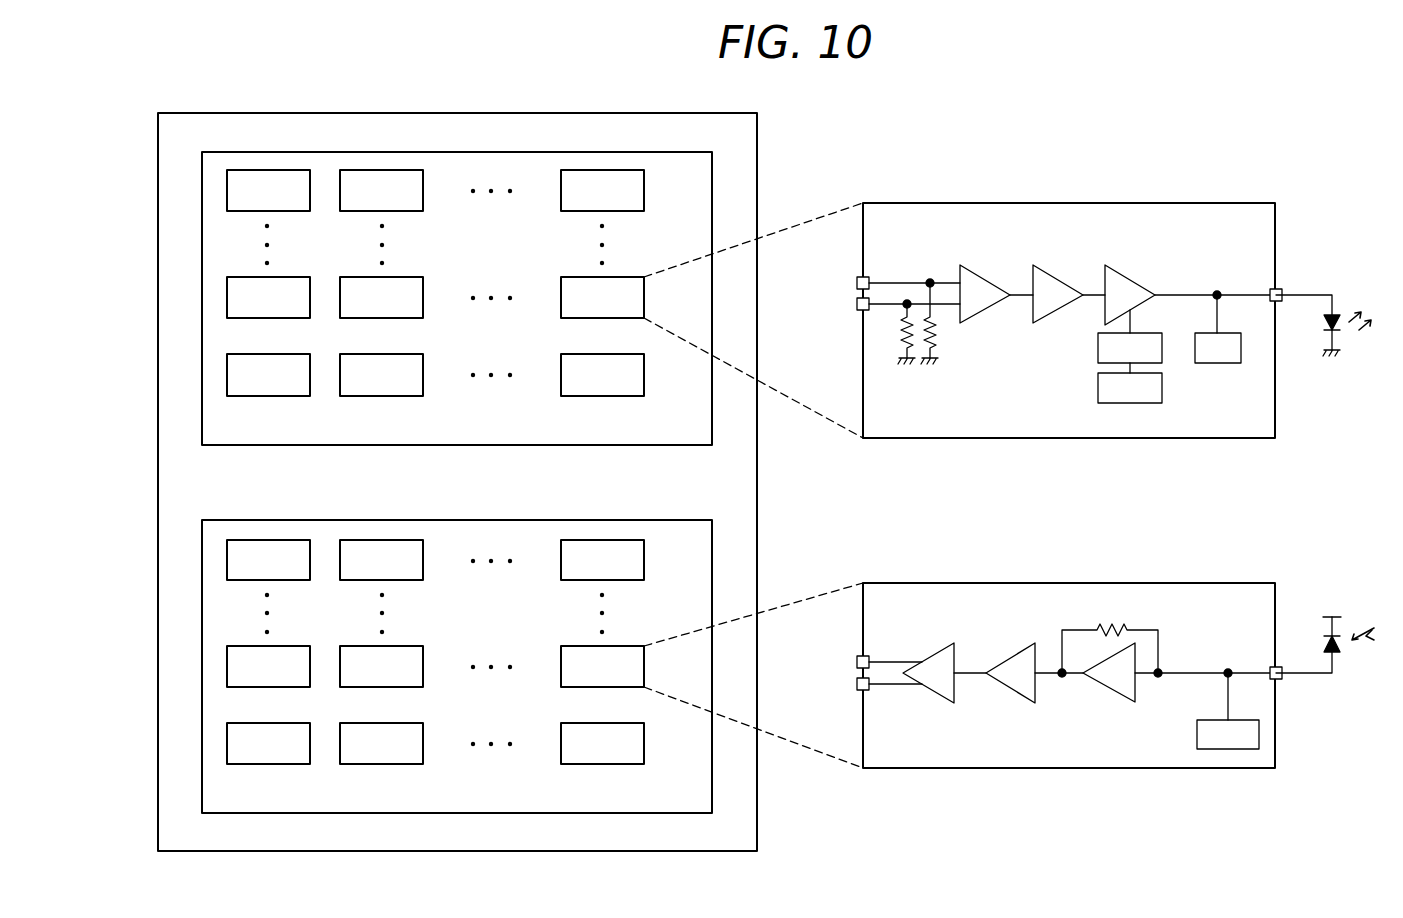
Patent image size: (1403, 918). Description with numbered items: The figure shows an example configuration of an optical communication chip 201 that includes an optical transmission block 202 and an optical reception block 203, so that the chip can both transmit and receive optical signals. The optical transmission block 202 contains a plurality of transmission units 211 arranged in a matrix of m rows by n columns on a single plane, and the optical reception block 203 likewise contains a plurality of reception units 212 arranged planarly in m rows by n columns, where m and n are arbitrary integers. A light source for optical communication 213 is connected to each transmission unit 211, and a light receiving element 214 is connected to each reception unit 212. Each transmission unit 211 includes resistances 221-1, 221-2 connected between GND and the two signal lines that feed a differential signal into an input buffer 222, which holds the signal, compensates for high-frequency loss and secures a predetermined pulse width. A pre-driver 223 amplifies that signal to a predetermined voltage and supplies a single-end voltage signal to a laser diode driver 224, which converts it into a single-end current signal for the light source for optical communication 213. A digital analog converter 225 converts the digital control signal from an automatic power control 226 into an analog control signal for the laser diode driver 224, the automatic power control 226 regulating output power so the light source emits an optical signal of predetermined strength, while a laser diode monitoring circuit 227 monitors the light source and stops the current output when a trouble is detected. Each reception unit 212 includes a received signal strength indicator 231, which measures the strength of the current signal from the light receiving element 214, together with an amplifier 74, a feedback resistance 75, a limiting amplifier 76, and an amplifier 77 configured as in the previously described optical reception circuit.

The optical communication chip 201 is at (458, 113).
The optical transmission block 202 is at (345, 445).
The optical reception block 203 is at (559, 520).
The transmission unit 211 is at (283, 211).
The reception unit 212 is at (283, 580).
The light source for optical communication 213 is at (1338, 318).
The light receiving element 214 is at (1338, 651).
The resistance 221-1 is at (900, 354).
The resistance 221-2 is at (938, 349).
The input buffer 222 is at (986, 280).
The pre-driver 223 is at (1059, 280).
The laser diode driver 224 is at (1131, 280).
The digital analog converter 225 is at (1098, 350).
The automatic power control 226 is at (1098, 390).
The laser diode monitoring circuit 227 is at (1217, 363).
The amplifier 74 is at (1105, 704).
The feedback resistance 75 is at (1110, 624).
The limiting amplifier 76 is at (1013, 656).
The amplifier 77 is at (933, 656).
The received signal strength indicator 231 is at (1197, 737).